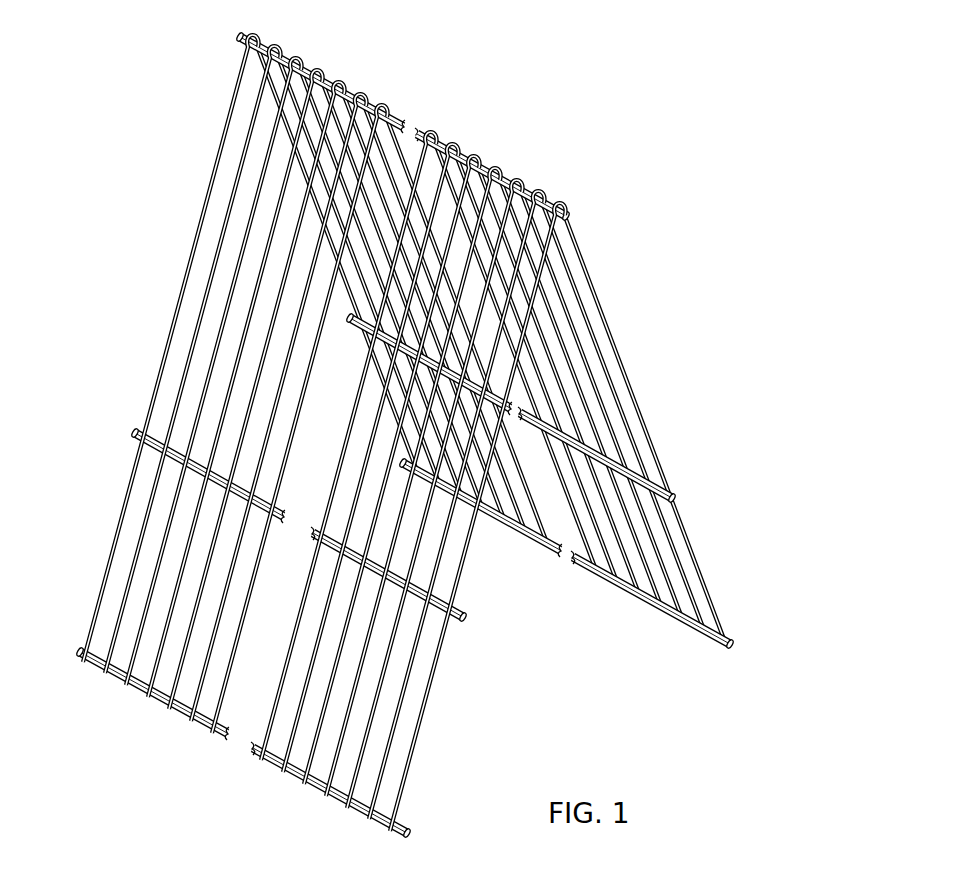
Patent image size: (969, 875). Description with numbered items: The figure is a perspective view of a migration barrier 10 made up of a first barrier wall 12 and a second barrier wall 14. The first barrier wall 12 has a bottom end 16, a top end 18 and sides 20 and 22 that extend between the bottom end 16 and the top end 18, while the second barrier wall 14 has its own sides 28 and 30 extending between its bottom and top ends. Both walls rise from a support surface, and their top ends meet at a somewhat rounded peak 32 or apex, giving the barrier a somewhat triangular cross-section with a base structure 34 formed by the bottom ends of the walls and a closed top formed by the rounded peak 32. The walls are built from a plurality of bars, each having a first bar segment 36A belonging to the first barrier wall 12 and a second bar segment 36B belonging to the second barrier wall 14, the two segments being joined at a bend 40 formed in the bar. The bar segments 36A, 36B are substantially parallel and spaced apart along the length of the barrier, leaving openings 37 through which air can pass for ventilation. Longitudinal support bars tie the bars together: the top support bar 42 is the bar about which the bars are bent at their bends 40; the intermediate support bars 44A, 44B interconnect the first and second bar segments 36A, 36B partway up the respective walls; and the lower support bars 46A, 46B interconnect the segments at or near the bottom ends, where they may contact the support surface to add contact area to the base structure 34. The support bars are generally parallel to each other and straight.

The migration barrier 10 is at (614, 116).
The first barrier wall 12 is at (161, 288).
The second barrier wall 14 is at (619, 296).
The bottom end 16 is at (95, 634).
The top end 18 is at (245, 83).
The side 20 is at (157, 390).
The side 22 is at (470, 598).
The side 28 is at (380, 352).
The side 30 is at (660, 450).
The rounded peak 32 is at (320, 76).
The base structure 34 is at (744, 618).
The first bar segment 36A is at (383, 688).
The second bar segment 36B is at (636, 535).
The opening 37 is at (634, 390).
The bend 40 is at (398, 116).
The support bar 42 is at (529, 185).
The support bar 44A is at (467, 620).
The support bar 44B is at (676, 497).
The support bar 46A is at (415, 826).
The support bar 46B is at (702, 633).